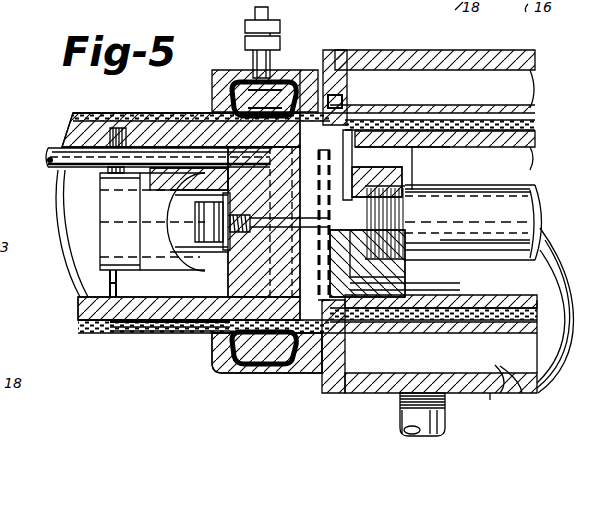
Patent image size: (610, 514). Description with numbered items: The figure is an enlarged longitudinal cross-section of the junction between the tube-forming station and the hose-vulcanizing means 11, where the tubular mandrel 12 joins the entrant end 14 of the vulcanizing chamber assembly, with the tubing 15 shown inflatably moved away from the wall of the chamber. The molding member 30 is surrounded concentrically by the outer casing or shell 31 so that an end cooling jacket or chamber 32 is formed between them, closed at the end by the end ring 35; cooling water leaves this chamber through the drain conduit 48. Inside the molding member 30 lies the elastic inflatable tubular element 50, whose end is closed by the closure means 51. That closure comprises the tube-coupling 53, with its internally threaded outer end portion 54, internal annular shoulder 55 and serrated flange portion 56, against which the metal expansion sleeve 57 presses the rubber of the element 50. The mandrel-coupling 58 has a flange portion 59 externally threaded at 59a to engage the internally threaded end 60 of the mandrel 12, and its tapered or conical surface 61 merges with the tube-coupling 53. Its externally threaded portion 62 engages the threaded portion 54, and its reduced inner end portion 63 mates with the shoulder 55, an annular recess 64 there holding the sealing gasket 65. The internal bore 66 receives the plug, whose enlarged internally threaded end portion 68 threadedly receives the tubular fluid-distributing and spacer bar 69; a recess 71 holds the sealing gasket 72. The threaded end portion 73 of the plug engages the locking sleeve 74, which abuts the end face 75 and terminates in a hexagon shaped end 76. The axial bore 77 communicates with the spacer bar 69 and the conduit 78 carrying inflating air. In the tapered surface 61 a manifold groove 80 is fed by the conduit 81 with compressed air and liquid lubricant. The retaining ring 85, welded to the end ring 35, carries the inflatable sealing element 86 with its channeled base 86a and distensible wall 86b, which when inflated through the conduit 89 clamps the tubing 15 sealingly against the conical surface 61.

The tubing or hose-vulcanizing means 11 is at (498, 400).
The tubular mandrel 12 is at (88, 318).
The entrant end 14 is at (322, 400).
The tubing or hose 15 is at (555, 318).
The molding member 30 is at (545, 330).
The outer casing or shell 31 is at (515, 392).
The end cooling jacket or chamber 32 is at (498, 372).
The end ring 35 is at (365, 52).
The drain conduit 48 is at (438, 413).
The inflatable tubular element or diaphragm 50 is at (530, 141).
The closure means 51 is at (455, 295).
The tube-coupling 53 is at (317, 390).
The internally threaded annular outer end portion 54 is at (297, 112).
The internal radially projecting annular shoulder 55 is at (332, 118).
The tube-receiving annular inner end or flange portion 56 is at (427, 138).
The metal expansion sleeve 57 is at (417, 147).
The mandrel-coupling 58 is at (168, 333).
The outer end or flange portion 59 is at (125, 330).
The external threads 59a is at (183, 113).
The internally threaded end 60 is at (162, 333).
The tapered or conical surface 61 is at (180, 112).
The externally threaded portion 62 is at (228, 278).
The reduced diameter cylindrical inner end portion 63 is at (390, 283).
The annular recess 64 is at (350, 159).
The sealing gasket 65 is at (338, 120).
The internal bore 66 is at (275, 262).
The enlarged internally threaded cylindrical end portion 68 is at (398, 268).
The tubular fluid-distributing and spacer bar 69 is at (545, 220).
The annular recess 71 is at (390, 225).
The annular sealing gasket 72 is at (395, 212).
The externally threaded projecting end portion 73 is at (230, 245).
The locking sleeve 74 is at (150, 272).
The end face 75 is at (270, 292).
The hexagon shaped end 76 is at (110, 252).
The axial bore 77 is at (463, 240).
The conduit 78 is at (90, 213).
The manifold groove 80 is at (303, 110).
The conduit 81 is at (45, 157).
The retaining ring 85 is at (248, 86).
The inflatable sealing element 86 is at (258, 82).
The channeled base 86a is at (240, 88).
The distensible wall 86b is at (245, 100).
The conduit 89 is at (252, 13).